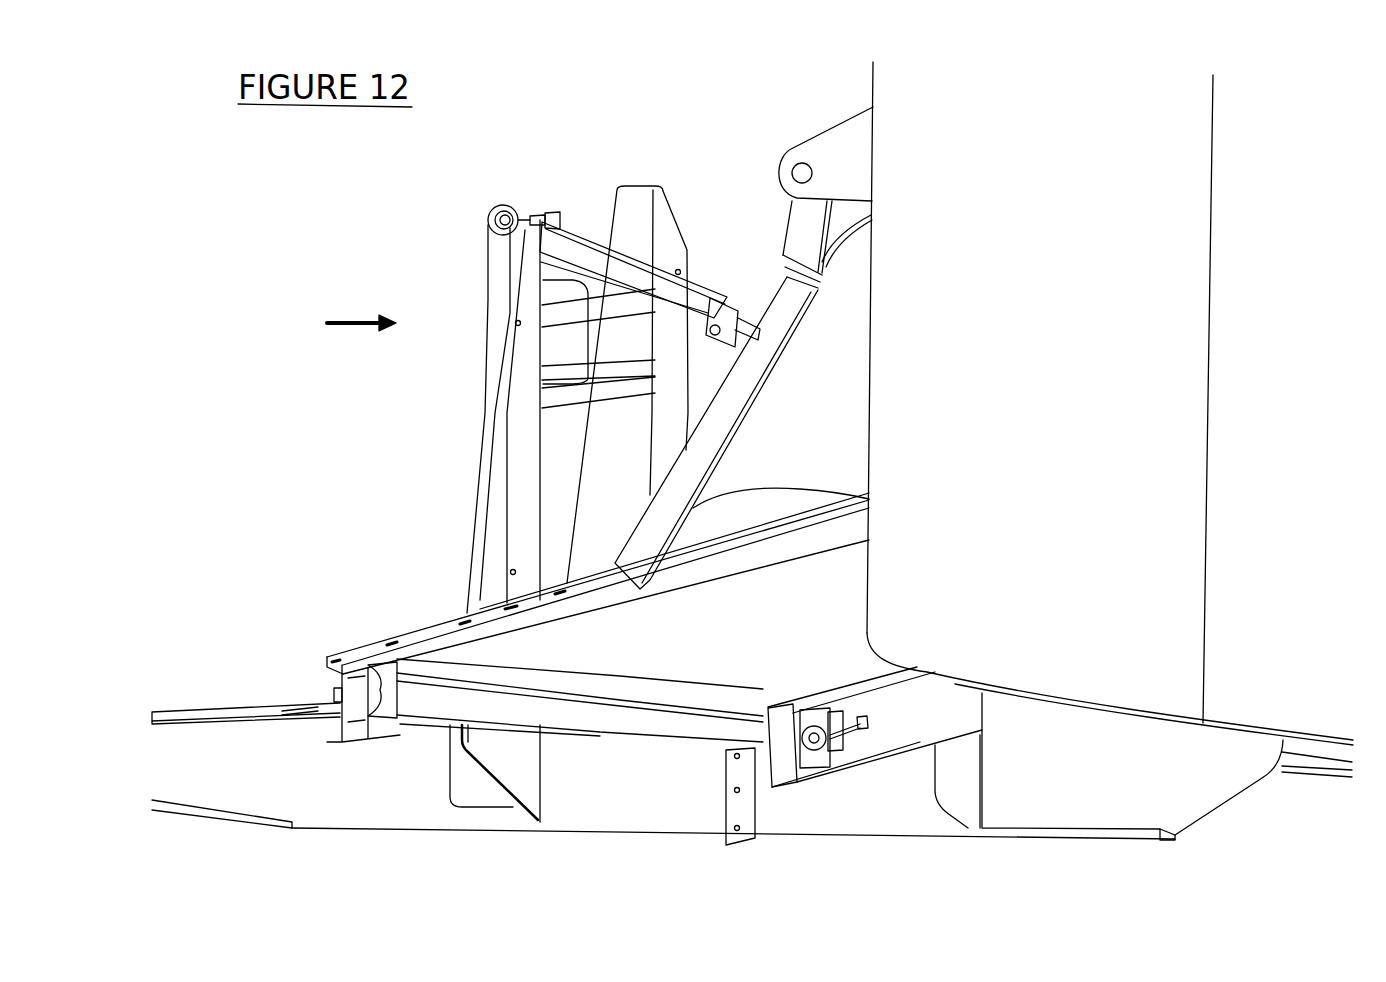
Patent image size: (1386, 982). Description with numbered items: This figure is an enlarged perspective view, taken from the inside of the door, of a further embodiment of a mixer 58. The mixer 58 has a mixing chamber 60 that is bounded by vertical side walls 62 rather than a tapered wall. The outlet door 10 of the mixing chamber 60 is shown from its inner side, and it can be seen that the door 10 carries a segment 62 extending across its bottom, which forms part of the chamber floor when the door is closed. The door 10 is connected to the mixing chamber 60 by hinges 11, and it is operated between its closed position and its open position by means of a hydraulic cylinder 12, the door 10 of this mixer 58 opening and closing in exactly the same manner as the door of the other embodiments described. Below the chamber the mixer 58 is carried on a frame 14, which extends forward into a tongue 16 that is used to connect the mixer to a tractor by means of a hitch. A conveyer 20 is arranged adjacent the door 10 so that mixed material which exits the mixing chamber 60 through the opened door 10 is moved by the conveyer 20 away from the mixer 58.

The outlet door 10 is at (777, 317).
The hinges 11 is at (838, 148).
The hydraulic cylinder 12 is at (593, 246).
The frame 14 is at (890, 795).
The tongue 16 is at (205, 757).
The conveyer 20 is at (512, 653).
The mixer 58 is at (344, 323).
The mixing chamber 60 is at (1138, 680).
The vertical side walls 62 is at (747, 517).